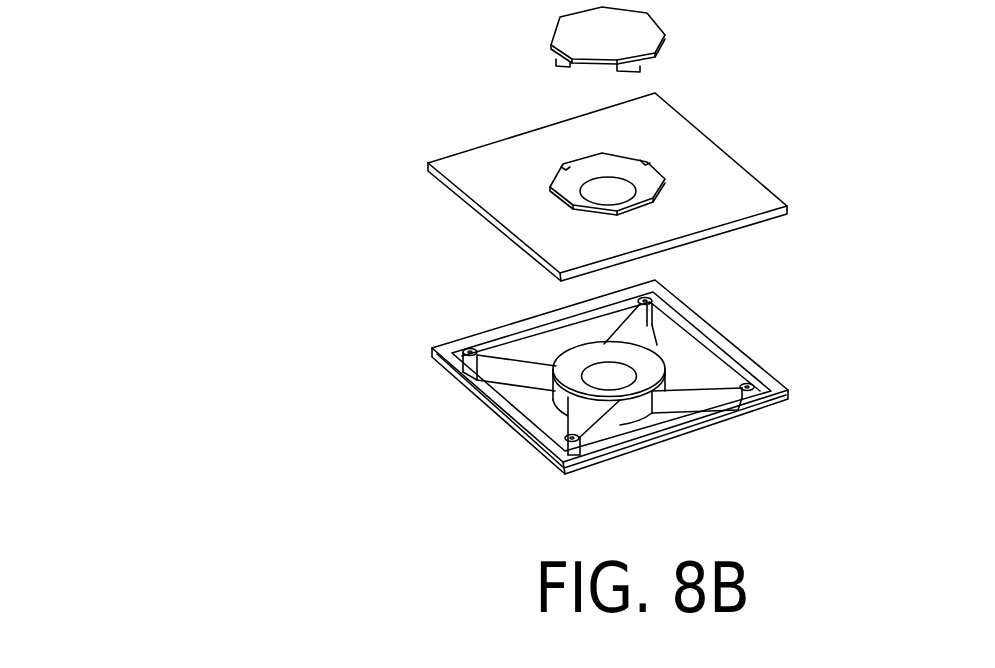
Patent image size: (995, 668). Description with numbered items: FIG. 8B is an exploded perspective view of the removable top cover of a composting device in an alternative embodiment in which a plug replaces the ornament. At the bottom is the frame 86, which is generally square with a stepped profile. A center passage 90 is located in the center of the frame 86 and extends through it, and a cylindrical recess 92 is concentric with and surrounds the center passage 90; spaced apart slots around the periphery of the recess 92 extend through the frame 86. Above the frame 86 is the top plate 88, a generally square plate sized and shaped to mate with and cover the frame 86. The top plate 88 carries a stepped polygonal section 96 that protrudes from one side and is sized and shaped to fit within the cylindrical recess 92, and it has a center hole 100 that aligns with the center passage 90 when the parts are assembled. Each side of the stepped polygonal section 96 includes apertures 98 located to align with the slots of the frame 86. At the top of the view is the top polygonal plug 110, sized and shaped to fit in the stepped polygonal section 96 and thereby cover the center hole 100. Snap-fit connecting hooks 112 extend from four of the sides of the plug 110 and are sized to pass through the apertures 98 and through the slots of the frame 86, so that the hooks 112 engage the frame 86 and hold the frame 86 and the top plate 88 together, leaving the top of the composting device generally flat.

The frame 86 is at (728, 334).
The top plate 88 is at (732, 152).
The center passage 90 is at (606, 378).
The cylindrical recess 92 is at (586, 343).
The stepped polygonal section 96 is at (557, 172).
The apertures 98 is at (577, 166).
The center hole 100 is at (609, 191).
The top polygonal plug 110 is at (623, 27).
The snap-fit connecting hooks 112 is at (647, 75).